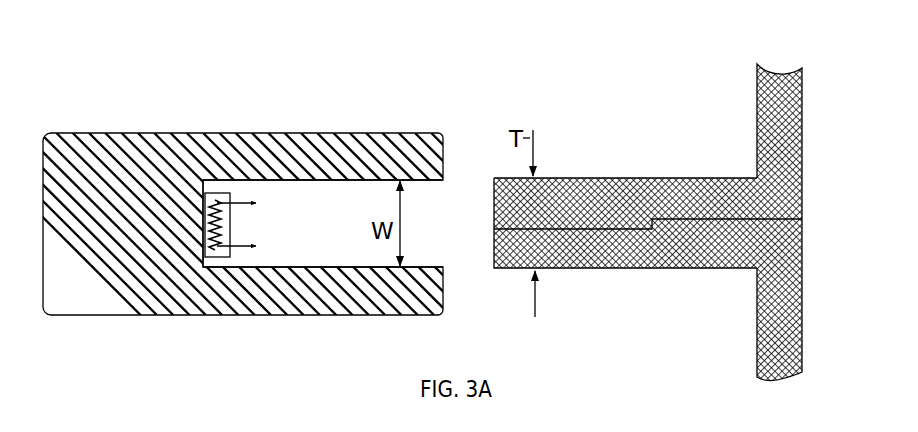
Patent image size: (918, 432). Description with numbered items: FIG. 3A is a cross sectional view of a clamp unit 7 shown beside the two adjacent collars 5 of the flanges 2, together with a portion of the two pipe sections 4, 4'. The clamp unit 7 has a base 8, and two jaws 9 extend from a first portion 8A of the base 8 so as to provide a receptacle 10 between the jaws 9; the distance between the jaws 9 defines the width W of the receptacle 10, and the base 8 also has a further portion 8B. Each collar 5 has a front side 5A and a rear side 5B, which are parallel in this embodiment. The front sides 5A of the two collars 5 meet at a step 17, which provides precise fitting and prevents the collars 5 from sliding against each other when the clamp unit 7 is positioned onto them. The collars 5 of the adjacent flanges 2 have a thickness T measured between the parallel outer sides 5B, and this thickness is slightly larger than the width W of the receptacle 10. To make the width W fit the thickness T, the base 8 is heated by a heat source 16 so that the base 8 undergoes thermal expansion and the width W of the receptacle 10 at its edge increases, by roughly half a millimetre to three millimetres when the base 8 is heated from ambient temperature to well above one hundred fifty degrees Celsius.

The flange 2 is at (648, 230).
The pipe section 4 is at (738, 121).
The pipe section 4' is at (738, 324).
The collar 5 is at (648, 216).
The front side 5A is at (607, 235).
The rear side 5B is at (650, 177).
The clamp unit 7 is at (306, 175).
The base 8 is at (306, 175).
The first portion 8A is at (178, 200).
The second holder portion 8B is at (80, 130).
The jaw 9 is at (332, 132).
The receptacle 10 is at (332, 243).
The heat source 16 is at (252, 225).
The step 17 is at (643, 221).